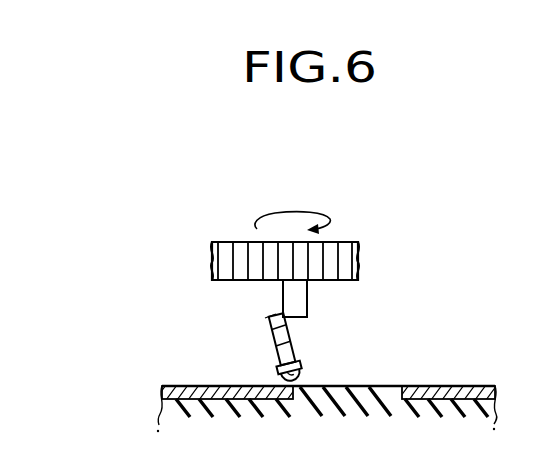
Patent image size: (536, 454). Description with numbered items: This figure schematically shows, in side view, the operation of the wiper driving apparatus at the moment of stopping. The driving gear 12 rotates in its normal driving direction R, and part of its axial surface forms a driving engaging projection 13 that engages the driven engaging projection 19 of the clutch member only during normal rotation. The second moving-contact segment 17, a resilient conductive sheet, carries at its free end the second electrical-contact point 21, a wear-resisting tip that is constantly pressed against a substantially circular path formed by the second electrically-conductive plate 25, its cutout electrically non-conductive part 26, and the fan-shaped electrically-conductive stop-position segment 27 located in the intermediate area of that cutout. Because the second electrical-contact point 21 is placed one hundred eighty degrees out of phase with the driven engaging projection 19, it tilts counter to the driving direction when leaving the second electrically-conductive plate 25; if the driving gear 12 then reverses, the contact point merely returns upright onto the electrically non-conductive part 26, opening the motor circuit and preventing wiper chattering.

The driving gear 12 is at (343, 242).
The driving engaging projection 13 is at (301, 306).
The second moving-contact segment 17 is at (289, 347).
The driven engaging projection 19 is at (266, 328).
The second electrical-contact point 21 is at (306, 375).
The second electrically-conductive plate 25 is at (212, 386).
The electrically non-conductive part 26 is at (381, 386).
The electrically-conductive stop-position segment 27 is at (437, 386).